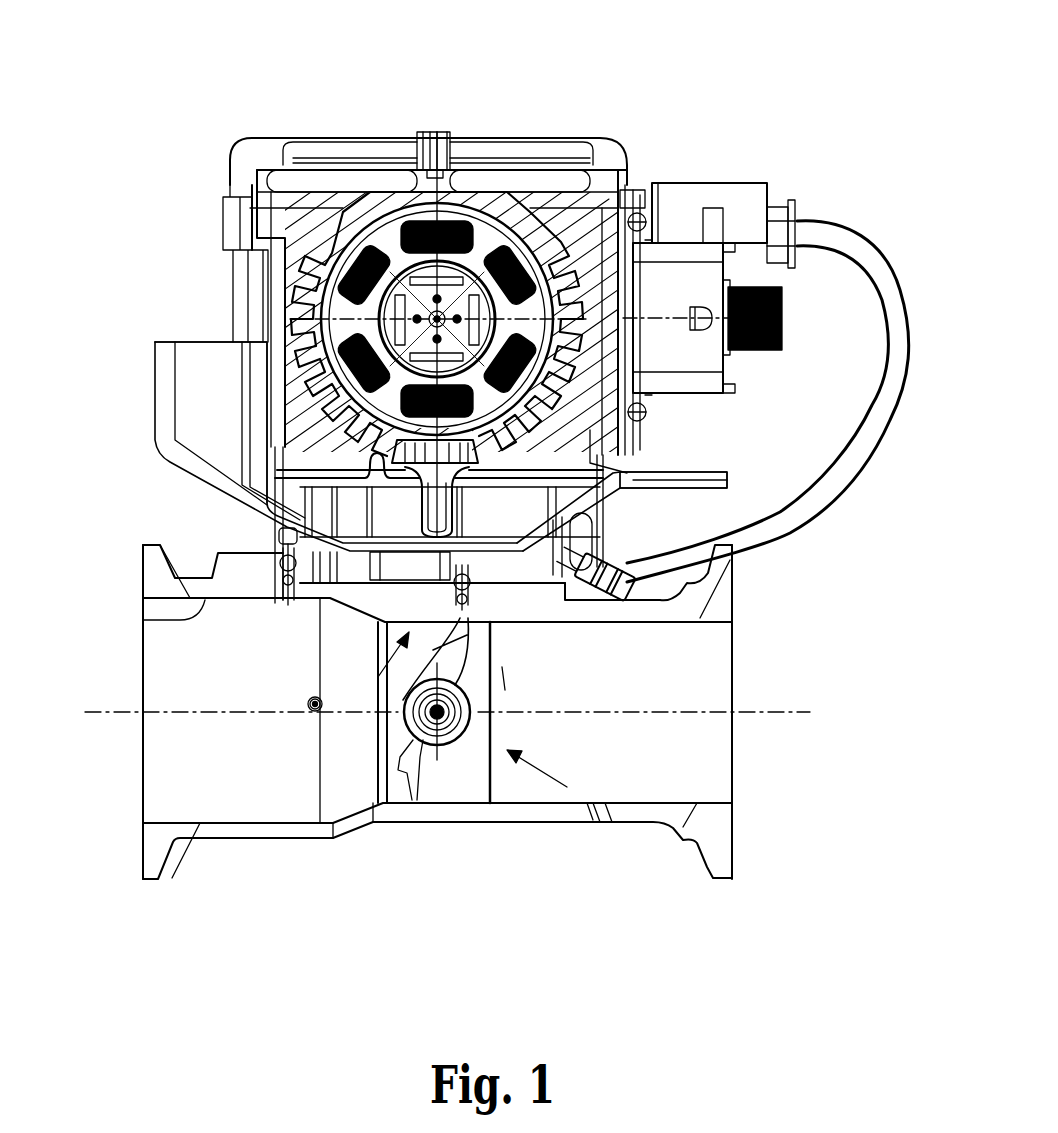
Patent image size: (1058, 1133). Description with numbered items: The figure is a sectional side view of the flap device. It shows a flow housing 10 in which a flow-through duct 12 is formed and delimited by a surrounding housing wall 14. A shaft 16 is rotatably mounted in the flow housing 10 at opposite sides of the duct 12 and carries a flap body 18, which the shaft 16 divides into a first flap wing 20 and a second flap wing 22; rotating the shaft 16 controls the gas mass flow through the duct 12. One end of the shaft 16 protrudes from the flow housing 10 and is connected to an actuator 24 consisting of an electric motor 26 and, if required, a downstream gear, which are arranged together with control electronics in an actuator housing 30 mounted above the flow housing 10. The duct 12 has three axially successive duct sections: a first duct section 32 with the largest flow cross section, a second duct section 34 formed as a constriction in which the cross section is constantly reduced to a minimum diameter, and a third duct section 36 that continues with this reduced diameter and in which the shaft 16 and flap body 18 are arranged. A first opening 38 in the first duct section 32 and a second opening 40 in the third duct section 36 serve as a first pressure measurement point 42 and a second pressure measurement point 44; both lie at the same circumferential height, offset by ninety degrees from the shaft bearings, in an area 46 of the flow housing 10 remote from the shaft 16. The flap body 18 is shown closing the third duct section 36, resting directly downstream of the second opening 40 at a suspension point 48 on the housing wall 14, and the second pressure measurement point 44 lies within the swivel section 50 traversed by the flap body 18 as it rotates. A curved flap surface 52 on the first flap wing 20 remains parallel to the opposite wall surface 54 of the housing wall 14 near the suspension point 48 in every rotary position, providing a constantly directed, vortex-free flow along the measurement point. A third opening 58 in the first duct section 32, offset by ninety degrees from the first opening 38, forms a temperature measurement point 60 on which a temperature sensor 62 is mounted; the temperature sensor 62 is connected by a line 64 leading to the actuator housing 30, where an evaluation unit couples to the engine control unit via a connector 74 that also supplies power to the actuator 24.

The flow housing 10 is at (217, 835).
The flow-through duct 12 is at (447, 710).
The housing wall 14 is at (210, 600).
The shaft 16 is at (463, 743).
The flap body 18 is at (432, 765).
The first flap wing 20 is at (600, 778).
The second flap wing 22 is at (376, 797).
The actuator 24 is at (569, 126).
The electric motor 26 is at (560, 233).
The actuator housing 30 is at (327, 263).
The first duct section 32 is at (175, 779).
The second duct section 34 is at (340, 830).
The third duct section 36 is at (477, 767).
The first opening 38 is at (440, 620).
The second opening 40 is at (525, 612).
The first pressure measurement point 42 is at (440, 620).
The second pressure measurement point 44 is at (525, 612).
The area of the flow housing remote from the shaft 46 is at (368, 650).
The suspension point 48 is at (490, 622).
The swivel section 50 is at (522, 622).
The flap surface 52 is at (282, 542).
The wall surface 54 is at (578, 545).
The third opening 58 is at (308, 707).
The temperature measurement point 60 is at (308, 707).
The temperature sensor 62 is at (313, 713).
The line 64 is at (850, 232).
The connector 74 is at (687, 357).